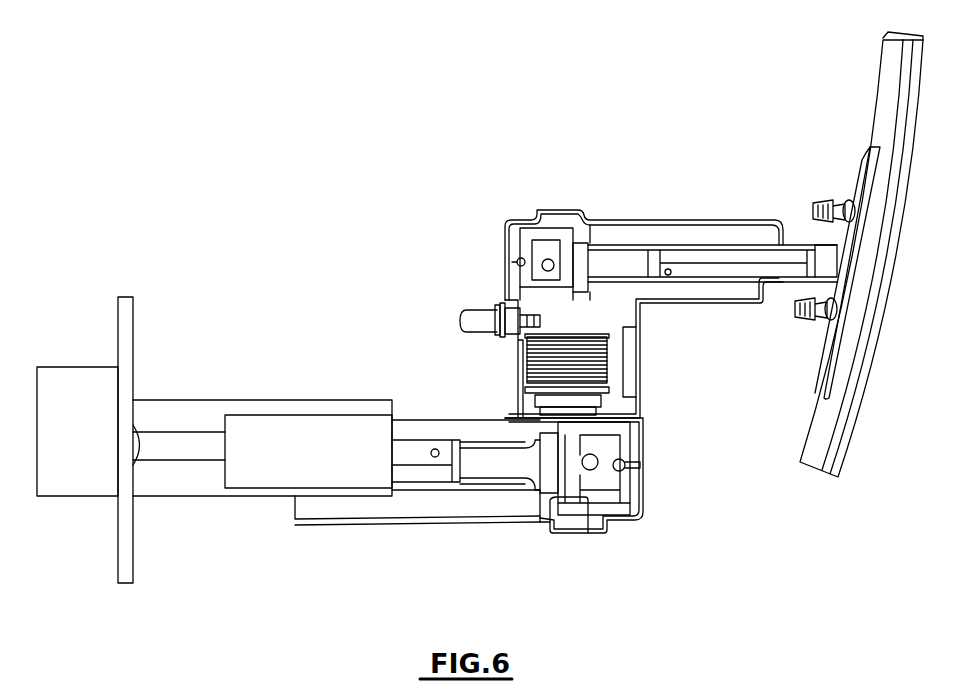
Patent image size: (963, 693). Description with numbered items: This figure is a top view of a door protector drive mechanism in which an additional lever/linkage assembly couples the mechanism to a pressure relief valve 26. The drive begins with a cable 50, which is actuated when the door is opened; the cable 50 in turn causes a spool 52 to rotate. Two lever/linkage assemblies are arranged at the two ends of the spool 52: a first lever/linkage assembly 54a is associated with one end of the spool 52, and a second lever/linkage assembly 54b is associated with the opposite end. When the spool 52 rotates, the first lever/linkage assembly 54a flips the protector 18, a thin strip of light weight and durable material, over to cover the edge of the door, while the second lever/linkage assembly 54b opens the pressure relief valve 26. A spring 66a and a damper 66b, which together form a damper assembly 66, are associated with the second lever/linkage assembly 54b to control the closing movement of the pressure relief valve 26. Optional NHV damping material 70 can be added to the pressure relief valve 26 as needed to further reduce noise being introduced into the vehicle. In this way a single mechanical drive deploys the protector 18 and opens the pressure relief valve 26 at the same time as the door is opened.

The protector 18 is at (806, 462).
The pressure relief valve 26 is at (133, 352).
The cable 50 is at (474, 315).
The spool 52 is at (545, 370).
The first lever/linkage assembly 54a is at (613, 237).
The second lever/linkage assembly 54b is at (513, 500).
The damper assembly 66 is at (297, 388).
The spring 66a is at (165, 435).
The damper 66b is at (352, 430).
The NHV damping material 70 is at (80, 367).